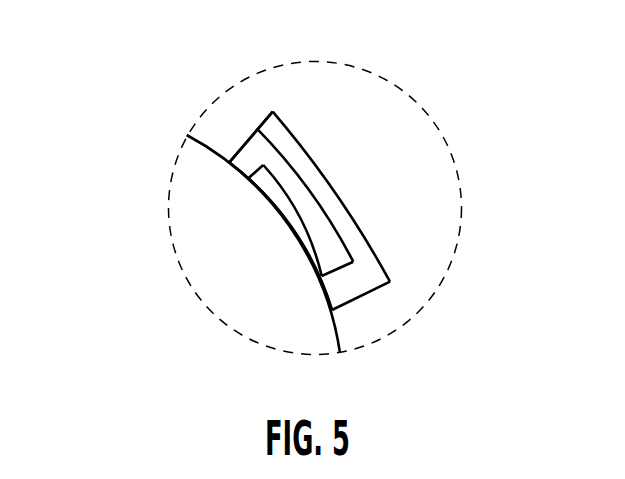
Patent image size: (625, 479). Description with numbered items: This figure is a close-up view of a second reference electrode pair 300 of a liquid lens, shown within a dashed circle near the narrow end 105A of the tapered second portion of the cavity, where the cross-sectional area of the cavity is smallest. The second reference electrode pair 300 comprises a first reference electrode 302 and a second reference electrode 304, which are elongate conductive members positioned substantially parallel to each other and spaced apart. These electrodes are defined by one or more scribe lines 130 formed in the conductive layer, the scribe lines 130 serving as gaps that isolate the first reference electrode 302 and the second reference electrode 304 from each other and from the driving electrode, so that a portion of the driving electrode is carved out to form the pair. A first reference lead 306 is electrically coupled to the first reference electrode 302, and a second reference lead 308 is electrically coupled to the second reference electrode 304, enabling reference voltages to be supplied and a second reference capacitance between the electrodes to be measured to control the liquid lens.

The second reference electrode pair 300 is at (340, 88).
The narrow end 105A is at (212, 152).
The scribe lines 130 is at (307, 148).
The first reference electrode 302 is at (292, 186).
The second reference electrode 304 is at (352, 227).
The first reference lead 306 is at (248, 156).
The second reference lead 308 is at (336, 289).